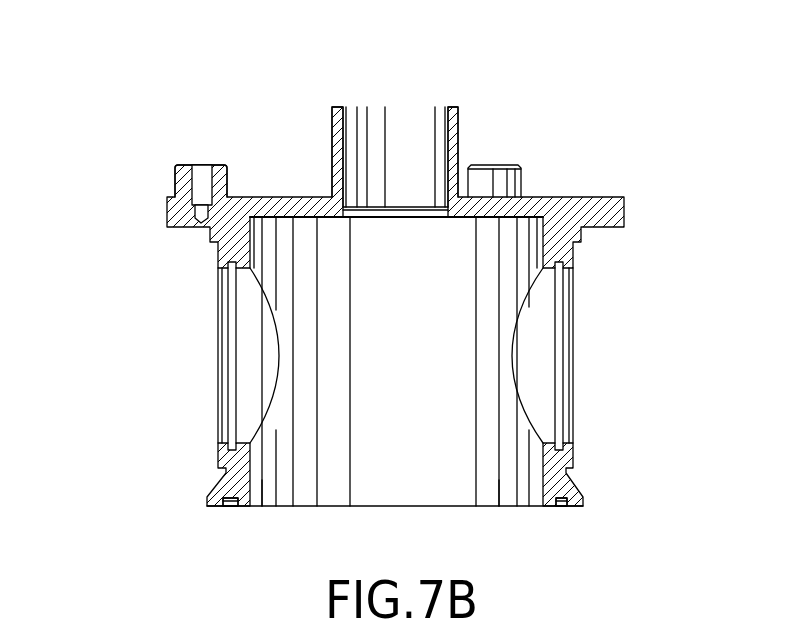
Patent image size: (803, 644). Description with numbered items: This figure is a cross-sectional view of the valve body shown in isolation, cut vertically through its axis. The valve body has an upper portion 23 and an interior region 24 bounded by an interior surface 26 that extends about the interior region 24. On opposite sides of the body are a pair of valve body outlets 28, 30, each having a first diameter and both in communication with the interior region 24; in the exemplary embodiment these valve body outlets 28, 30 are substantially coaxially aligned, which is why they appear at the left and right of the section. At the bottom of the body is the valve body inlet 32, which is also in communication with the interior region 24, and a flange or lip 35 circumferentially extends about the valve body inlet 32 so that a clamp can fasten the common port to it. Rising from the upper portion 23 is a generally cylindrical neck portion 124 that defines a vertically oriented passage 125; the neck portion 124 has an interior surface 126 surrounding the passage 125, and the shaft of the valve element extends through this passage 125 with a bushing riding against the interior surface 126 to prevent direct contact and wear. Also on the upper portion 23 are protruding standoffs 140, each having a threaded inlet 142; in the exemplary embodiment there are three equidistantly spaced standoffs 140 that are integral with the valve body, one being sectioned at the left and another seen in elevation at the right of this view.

The upper portion 23 is at (267, 197).
The interior region 24 is at (453, 329).
The interior surface 26 is at (505, 487).
The valve body outlet 28 is at (228, 410).
The valve body outlet 30 is at (563, 425).
The valve body inlet 32 is at (292, 507).
The flange 35 is at (577, 498).
The neck portion 124 is at (458, 128).
The passage 125 is at (426, 128).
The interior surface 126 is at (343, 138).
The protruding standoff 140 is at (175, 183).
The threaded inlet 142 is at (198, 170).